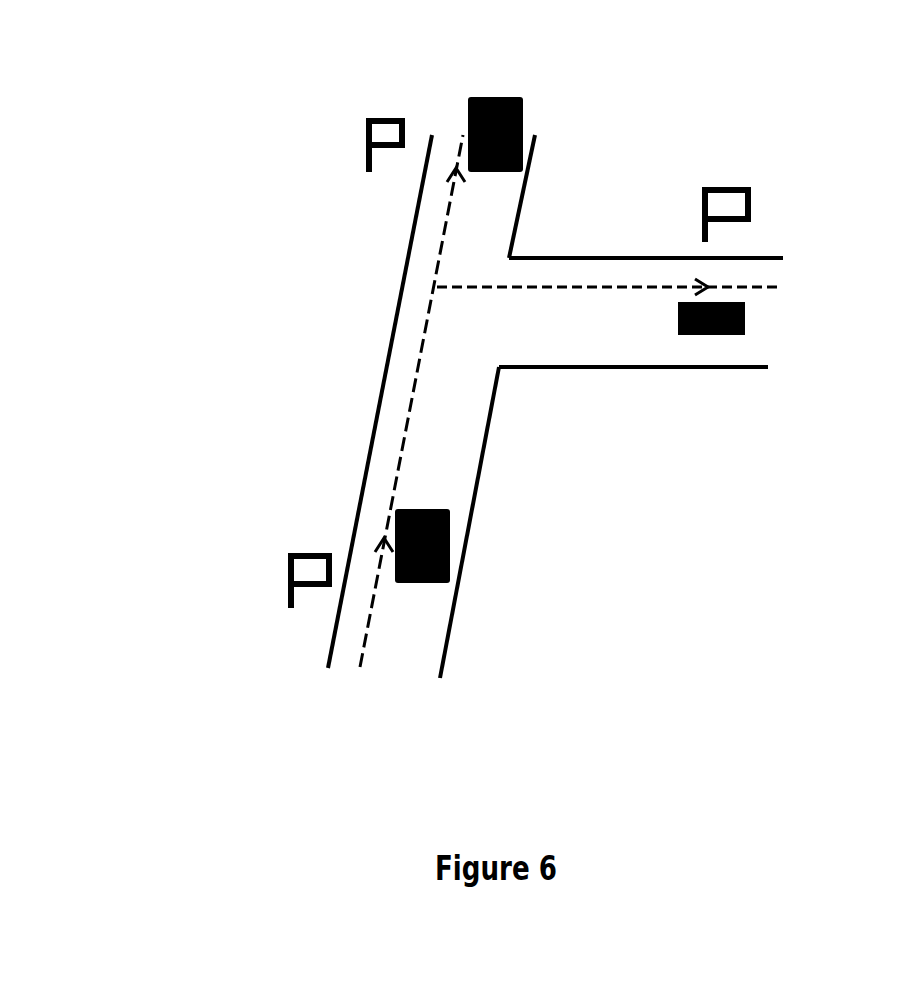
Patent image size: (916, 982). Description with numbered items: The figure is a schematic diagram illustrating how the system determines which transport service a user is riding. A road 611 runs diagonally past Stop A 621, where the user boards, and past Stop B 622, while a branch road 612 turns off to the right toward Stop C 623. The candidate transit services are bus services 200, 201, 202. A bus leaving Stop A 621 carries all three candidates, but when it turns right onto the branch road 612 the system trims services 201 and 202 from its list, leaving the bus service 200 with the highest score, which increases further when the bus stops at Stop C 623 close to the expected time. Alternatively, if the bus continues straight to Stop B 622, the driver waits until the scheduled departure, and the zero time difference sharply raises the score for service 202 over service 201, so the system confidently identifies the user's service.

The road 611 is at (460, 447).
The branch road 612 is at (655, 357).
The Stop A 621 is at (310, 553).
The Stop B 622 is at (387, 117).
The Stop C 623 is at (730, 187).
The bus service 200 is at (711, 318).
The bus service 201 is at (495, 134).
The bus service 202 is at (422, 546).